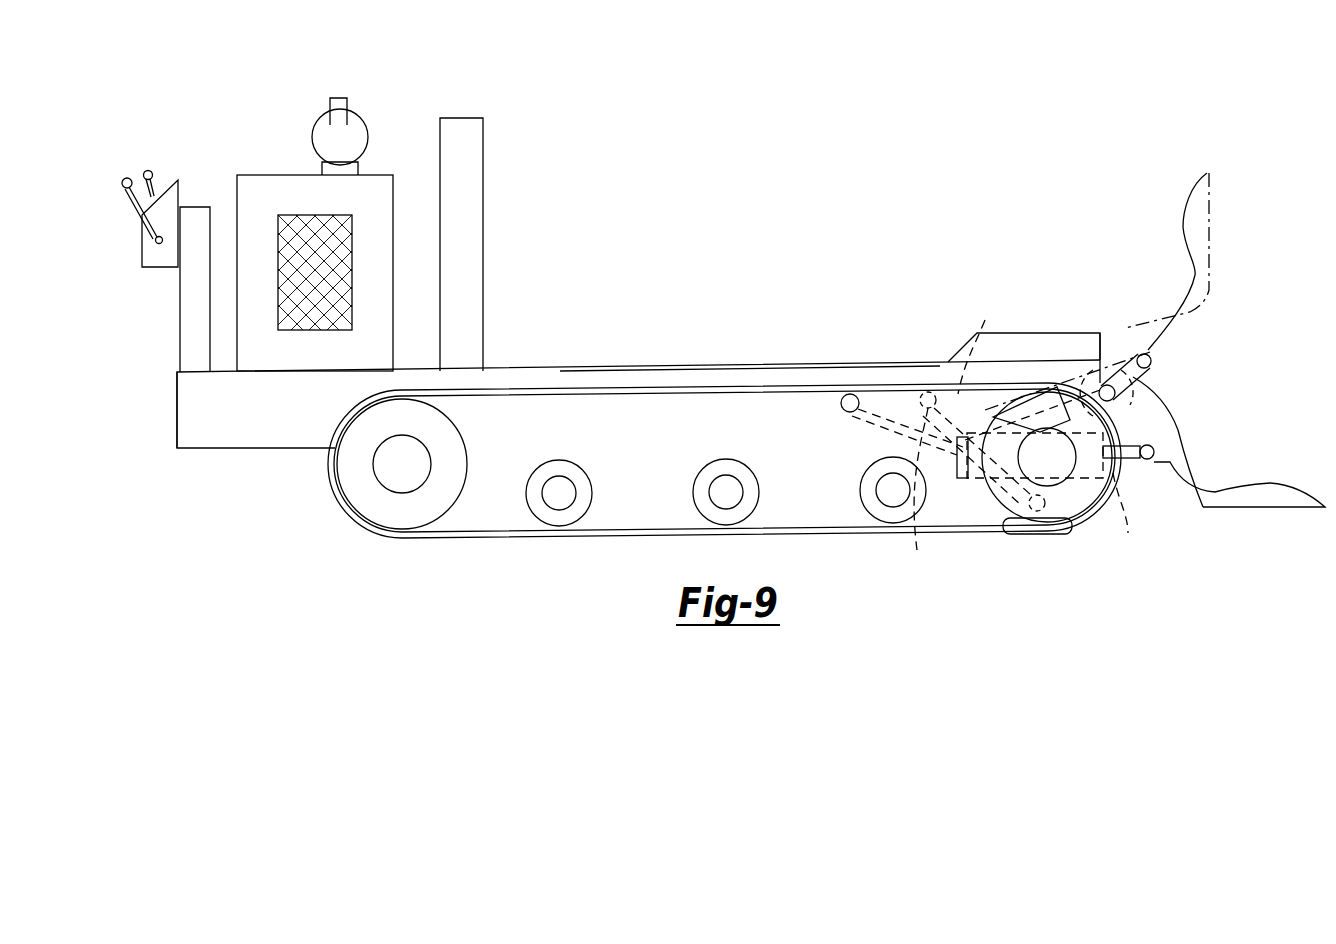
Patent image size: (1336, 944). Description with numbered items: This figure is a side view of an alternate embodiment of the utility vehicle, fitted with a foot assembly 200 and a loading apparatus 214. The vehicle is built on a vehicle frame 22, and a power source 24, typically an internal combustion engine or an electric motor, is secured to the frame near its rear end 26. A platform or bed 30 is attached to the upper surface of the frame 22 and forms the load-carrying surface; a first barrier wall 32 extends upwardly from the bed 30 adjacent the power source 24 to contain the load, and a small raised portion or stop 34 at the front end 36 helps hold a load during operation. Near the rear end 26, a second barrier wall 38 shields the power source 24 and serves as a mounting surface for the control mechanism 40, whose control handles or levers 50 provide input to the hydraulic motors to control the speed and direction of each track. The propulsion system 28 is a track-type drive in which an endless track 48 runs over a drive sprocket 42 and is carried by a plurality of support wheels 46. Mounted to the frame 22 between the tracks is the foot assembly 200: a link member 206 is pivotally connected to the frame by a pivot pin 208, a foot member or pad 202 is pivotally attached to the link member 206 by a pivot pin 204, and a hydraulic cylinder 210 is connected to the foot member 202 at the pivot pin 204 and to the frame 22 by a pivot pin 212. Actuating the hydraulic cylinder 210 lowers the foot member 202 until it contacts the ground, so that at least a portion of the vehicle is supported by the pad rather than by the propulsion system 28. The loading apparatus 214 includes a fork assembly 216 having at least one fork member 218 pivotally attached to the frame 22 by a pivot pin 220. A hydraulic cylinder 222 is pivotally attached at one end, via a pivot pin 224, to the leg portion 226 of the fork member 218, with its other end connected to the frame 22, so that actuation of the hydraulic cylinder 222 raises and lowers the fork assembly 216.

The vehicle frame 22 is at (234, 458).
The power source 24 is at (263, 170).
The rear end 26 is at (177, 415).
The propulsion system 28 is at (708, 501).
The platform or bed 30 is at (563, 368).
The first barrier member or wall 32 is at (461, 135).
The raised portion or stop 34 is at (1060, 333).
The front end 36 is at (1152, 363).
The second barrier member or wall 38 is at (195, 210).
The control mechanism 40 is at (152, 272).
The drive wheel or sprocket 42 is at (377, 502).
The support wheels or sprockets 46 is at (583, 490).
The endless belt or track 48 is at (478, 540).
The control handles or levers 50 is at (147, 171).
The foot assembly 200 is at (958, 495).
The foot member or pad 202 is at (1055, 536).
The pivot pin 204 is at (1040, 513).
The link member 206 is at (915, 495).
The pivot pin 208 is at (849, 394).
The hydraulic cylinder 210 is at (978, 339).
The pivot pin 212 is at (928, 392).
The loading apparatus or system 214 is at (1225, 381).
The fork assembly 216 is at (1177, 499).
The fork member 218 is at (1272, 513).
The pivot pin 220 is at (1105, 385).
The hydraulic cylinder 222 is at (1128, 516).
The pivot pin 224 is at (1180, 442).
The leg portion 226 is at (1172, 468).